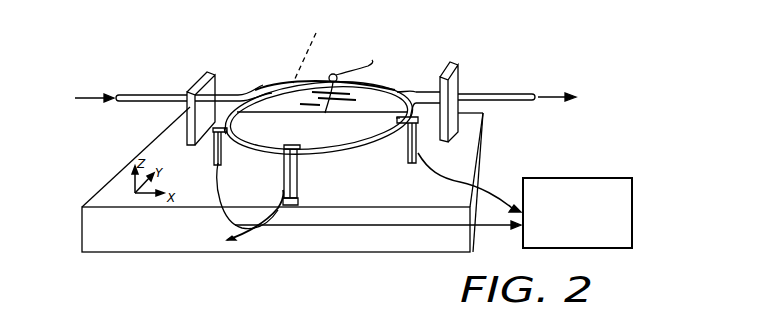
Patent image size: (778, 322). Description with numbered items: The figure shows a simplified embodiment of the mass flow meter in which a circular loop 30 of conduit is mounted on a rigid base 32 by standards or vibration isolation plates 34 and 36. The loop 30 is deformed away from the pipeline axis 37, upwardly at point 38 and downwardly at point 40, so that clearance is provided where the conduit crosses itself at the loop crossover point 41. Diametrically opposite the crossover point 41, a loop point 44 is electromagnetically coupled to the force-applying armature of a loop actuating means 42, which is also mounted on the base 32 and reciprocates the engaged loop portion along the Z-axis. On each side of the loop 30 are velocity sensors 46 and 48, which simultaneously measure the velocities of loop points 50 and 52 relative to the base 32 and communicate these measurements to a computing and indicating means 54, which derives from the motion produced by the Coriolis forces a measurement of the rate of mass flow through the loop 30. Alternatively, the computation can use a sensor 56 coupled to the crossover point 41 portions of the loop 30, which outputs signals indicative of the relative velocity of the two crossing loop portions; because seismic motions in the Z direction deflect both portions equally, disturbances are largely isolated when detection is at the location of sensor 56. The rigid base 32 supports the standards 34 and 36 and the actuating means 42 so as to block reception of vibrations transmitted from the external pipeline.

The circular loop 30 is at (351, 150).
The base 32 is at (480, 162).
The standard 34 is at (214, 74).
The standard 36 is at (462, 77).
The pipeline axis 37 is at (319, 53).
The upward deformation point 38 is at (276, 94).
The downward deformation point 40 is at (406, 92).
The loop crossover point 41 is at (326, 114).
The loop actuating means 42 is at (300, 190).
The loop point 44 is at (285, 160).
The velocity sensor 46 is at (220, 166).
The velocity sensor 48 is at (411, 153).
The loop point 50 is at (228, 131).
The loop point 52 is at (398, 120).
The computing and indicating means 54 is at (592, 178).
The sensor 56 is at (338, 80).